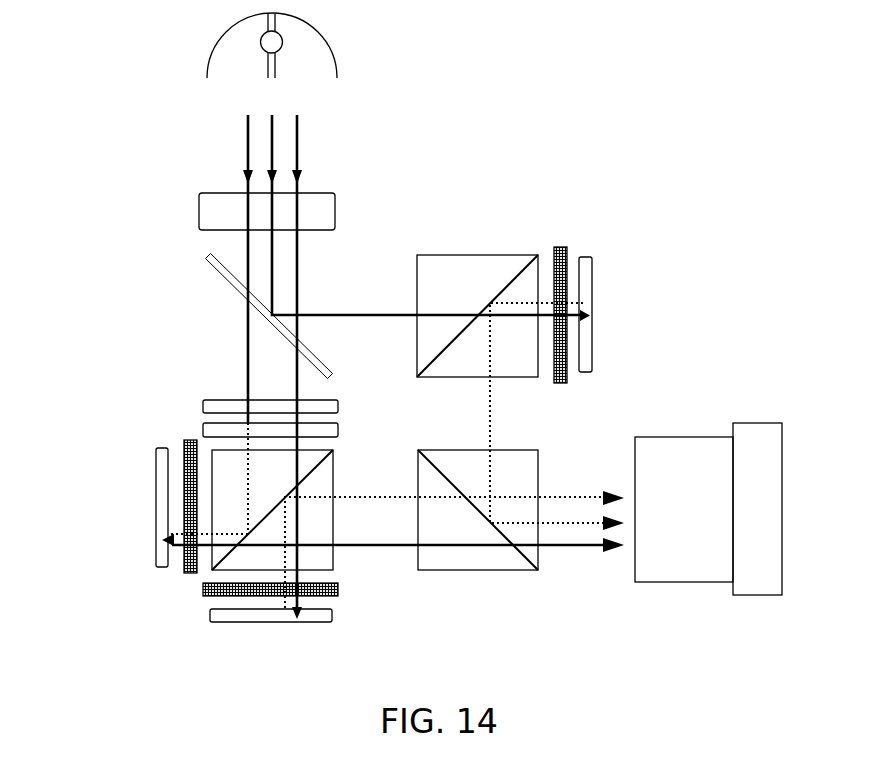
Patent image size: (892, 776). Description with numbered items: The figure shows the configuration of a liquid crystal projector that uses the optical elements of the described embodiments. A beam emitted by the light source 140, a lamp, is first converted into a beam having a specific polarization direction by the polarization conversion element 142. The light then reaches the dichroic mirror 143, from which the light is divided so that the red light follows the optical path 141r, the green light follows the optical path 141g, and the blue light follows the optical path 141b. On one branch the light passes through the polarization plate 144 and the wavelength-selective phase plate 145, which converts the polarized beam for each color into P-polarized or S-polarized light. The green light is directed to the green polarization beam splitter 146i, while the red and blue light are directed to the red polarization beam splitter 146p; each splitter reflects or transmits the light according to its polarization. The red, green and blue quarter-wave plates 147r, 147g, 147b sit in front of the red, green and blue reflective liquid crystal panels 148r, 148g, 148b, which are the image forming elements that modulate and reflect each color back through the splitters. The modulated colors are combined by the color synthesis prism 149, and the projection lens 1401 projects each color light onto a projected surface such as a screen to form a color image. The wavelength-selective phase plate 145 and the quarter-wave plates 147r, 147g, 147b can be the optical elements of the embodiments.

The light source 140 is at (213, 43).
The optical path of blue light 141b is at (247, 160).
The optical path of green light 141g is at (277, 137).
The optical path of red light 141r is at (300, 157).
The polarization conversion element 142 is at (212, 213).
The dichroic mirror 143 is at (212, 270).
The polarization plate 144 is at (222, 404).
The wavelength-selective phase plate 145 is at (210, 432).
The red polarization beam splitter 146p is at (223, 456).
The green polarization beam splitter 146i is at (428, 262).
The blue quarter-wave plate 147b is at (185, 491).
The green quarter-wave plate 147g is at (556, 245).
The red quarter-wave plate 147r is at (203, 592).
The blue reflective liquid crystal panel 148b is at (157, 520).
The green reflective liquid crystal panel 148g is at (580, 360).
The red reflective liquid crystal panel 148r is at (253, 615).
The color synthesis prism 149 is at (440, 553).
The projection lens 1401 is at (660, 444).